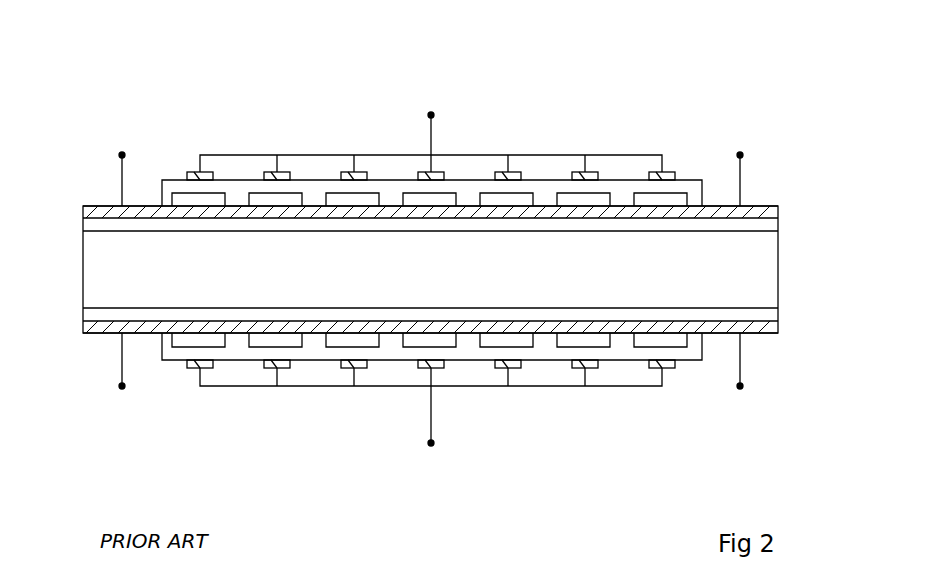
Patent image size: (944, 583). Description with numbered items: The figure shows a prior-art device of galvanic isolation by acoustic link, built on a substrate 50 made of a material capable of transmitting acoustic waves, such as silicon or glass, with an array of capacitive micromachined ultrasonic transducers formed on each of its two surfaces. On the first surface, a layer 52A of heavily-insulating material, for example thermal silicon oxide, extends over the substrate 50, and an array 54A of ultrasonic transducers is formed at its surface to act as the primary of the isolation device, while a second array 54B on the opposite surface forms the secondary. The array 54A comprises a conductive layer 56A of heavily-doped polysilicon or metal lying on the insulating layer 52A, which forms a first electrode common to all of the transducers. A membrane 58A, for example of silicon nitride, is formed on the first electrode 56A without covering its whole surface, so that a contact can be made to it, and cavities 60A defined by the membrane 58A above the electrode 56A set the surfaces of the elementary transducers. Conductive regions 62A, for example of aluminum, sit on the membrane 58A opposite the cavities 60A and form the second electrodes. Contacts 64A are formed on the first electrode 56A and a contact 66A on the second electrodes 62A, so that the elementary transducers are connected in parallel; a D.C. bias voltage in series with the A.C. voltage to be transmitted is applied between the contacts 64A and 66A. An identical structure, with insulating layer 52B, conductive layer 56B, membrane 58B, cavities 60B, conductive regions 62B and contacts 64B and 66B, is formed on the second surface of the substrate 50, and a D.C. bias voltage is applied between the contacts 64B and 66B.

The substrate 50 is at (747, 268).
The insulating material layer 52A is at (765, 224).
The insulating material layer 52B is at (763, 313).
The array of ultrasonic transducers 54A is at (432, 108).
The array of ultrasonic transducers 54B is at (407, 413).
The conductive layer 56A is at (757, 212).
The conductive layer 56B is at (760, 335).
The membrane 58A is at (237, 192).
The membrane 58B is at (390, 362).
The cavities 60A is at (297, 197).
The cavities 60B is at (297, 347).
The conductive regions 62A is at (377, 172).
The conductive regions 62B is at (270, 387).
The contacts 64A is at (116, 174).
The contacts 64B is at (121, 356).
The contact 66A is at (440, 117).
The contact 66B is at (433, 420).